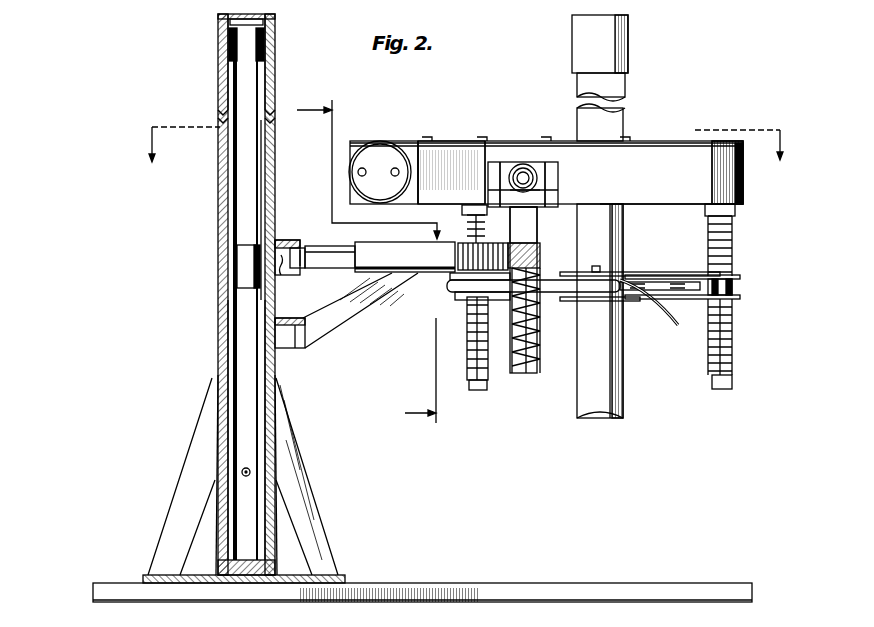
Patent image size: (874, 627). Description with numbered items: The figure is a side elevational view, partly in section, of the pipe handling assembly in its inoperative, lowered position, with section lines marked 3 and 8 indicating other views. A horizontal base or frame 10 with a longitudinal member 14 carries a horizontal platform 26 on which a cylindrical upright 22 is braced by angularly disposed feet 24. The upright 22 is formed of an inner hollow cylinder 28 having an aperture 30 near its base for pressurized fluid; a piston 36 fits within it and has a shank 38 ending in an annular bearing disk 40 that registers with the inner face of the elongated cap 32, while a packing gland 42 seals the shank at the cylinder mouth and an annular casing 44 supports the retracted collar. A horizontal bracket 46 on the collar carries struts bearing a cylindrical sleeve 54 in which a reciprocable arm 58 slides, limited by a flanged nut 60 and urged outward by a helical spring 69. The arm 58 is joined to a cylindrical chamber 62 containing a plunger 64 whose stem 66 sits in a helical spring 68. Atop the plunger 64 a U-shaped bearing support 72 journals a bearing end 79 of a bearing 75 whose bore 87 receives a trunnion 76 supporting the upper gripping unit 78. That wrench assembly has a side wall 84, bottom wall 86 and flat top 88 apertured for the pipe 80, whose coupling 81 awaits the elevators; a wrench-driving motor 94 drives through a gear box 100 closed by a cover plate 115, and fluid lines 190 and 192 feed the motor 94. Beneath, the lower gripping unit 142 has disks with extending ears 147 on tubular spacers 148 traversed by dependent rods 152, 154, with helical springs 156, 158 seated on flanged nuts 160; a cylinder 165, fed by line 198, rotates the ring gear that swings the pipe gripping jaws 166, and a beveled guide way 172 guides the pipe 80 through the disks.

The base or frame 10 is at (496, 584).
The longitudinal member 14 is at (666, 582).
The cylindrical upright 22 is at (210, 357).
The angularly disposed feet 24 is at (184, 470).
The horizontal platform 26 is at (195, 575).
The inner hollow cylinder 28 is at (262, 445).
The aperture 30 is at (252, 472).
The elongated cap 32 is at (220, 92).
The piston 36 is at (240, 263).
The shank 38 is at (243, 152).
The annular bearing disk 40 is at (222, 22).
The packing gland 42 is at (228, 56).
The annular casing 44 is at (218, 419).
The horizontal bracket 46 is at (292, 348).
The cylindrical sleeve 54 is at (386, 270).
The reciprocable arm 58 is at (330, 275).
The flanged nut 60 is at (297, 240).
The cylindrical chamber 62 is at (521, 376).
The plunger 64 is at (535, 255).
The stem 66 is at (540, 315).
The helical spring 68 is at (512, 375).
The helical spring 69 is at (458, 256).
The U-shaped bearing support 72 is at (554, 164).
The bearing 75 is at (535, 165).
The trunnion 76 is at (520, 173).
The upper gripping unit 78 is at (672, 140).
The bearing end 79 is at (487, 173).
The pipe 80 is at (608, 115).
The coupling 81 is at (603, 45).
The side wall 84 is at (546, 170).
The bottom wall 86 is at (645, 204).
The bearing block groove 87 is at (540, 188).
The flat top 88 is at (738, 141).
The wrench-driving motor 94 is at (378, 140).
The gear box 100 is at (420, 141).
The cover plate 115 is at (401, 141).
The lower gripping unit 142 is at (703, 262).
The extending ears 147 is at (740, 277).
The tubular spacer 148 is at (733, 287).
The dependent rod 152 is at (467, 346).
The dependent rod 154 is at (733, 346).
The helical spring 156 is at (470, 366).
The helical spring 158 is at (733, 360).
The flanged nut 160 is at (470, 388).
The cylinder 165 is at (598, 295).
The pipe gripping jaws 166 is at (700, 300).
The guide way 172 is at (621, 272).
The line 190 is at (358, 172).
The line 192 is at (399, 172).
The line 198 is at (455, 292).
The section line 3 is at (460, 150).
The section line 8 is at (368, 268).